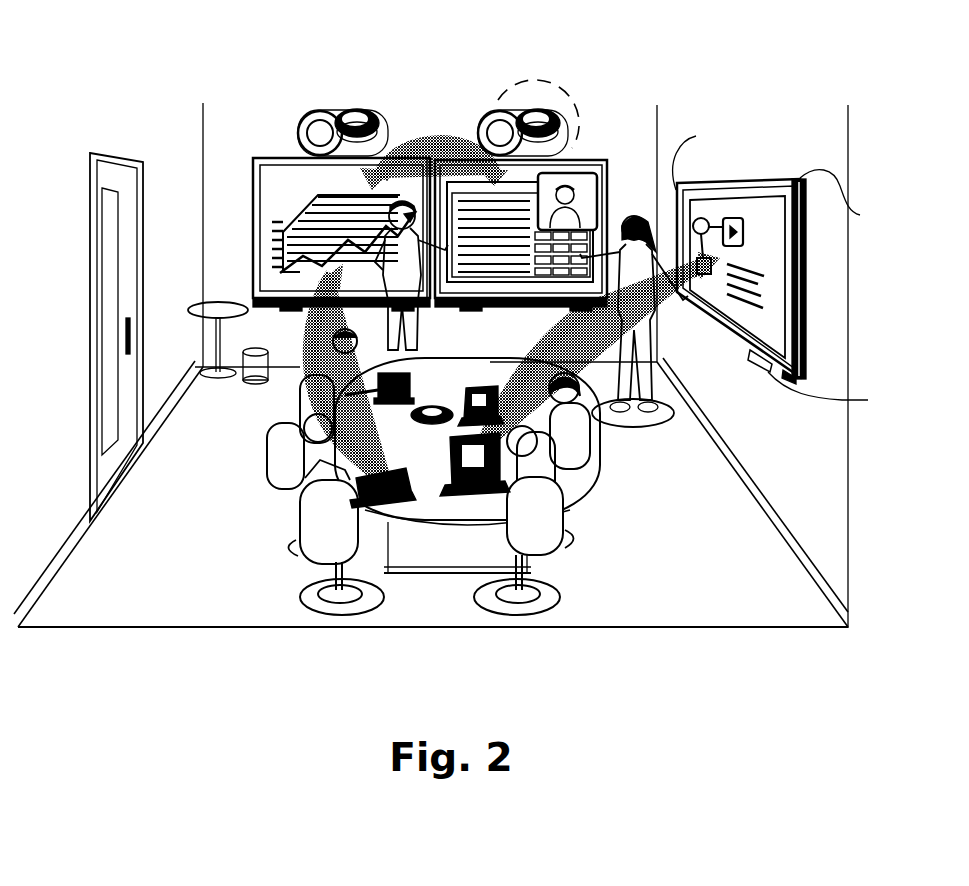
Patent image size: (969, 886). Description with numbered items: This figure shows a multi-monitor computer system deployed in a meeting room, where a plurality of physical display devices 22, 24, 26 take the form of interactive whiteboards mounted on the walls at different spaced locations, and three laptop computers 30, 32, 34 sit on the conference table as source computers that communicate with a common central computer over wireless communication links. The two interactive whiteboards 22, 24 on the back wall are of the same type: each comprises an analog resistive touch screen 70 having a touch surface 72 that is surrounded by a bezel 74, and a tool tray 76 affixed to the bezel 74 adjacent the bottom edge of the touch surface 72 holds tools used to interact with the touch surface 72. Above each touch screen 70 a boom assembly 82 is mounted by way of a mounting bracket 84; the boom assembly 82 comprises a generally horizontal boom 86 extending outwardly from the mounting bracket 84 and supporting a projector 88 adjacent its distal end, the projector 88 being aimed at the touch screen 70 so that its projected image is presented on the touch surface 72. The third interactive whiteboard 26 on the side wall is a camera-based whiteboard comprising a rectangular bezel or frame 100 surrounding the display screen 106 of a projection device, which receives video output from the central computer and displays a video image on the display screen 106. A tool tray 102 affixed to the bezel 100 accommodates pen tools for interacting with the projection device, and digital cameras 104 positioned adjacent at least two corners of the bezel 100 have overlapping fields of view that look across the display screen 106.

The physical display device 22 is at (297, 221).
The physical display device 24 is at (559, 166).
The physical display device 26 is at (770, 397).
The laptop computer 30 is at (404, 498).
The laptop computer 32 is at (448, 458).
The laptop computer 34 is at (460, 387).
The touch screen 70 is at (624, 192).
The touch surface 72 is at (271, 187).
The bezel 74 is at (253, 228).
The tool tray 76 is at (300, 306).
The boom assembly 82 is at (515, 86).
The mounting bracket 84 is at (490, 108).
The boom 86 is at (578, 140).
The projector 88 is at (540, 110).
The bezel 100 is at (790, 228).
The tool tray 102 is at (725, 340).
The digital cameras 104 is at (790, 262).
The display screen 106 is at (766, 253).